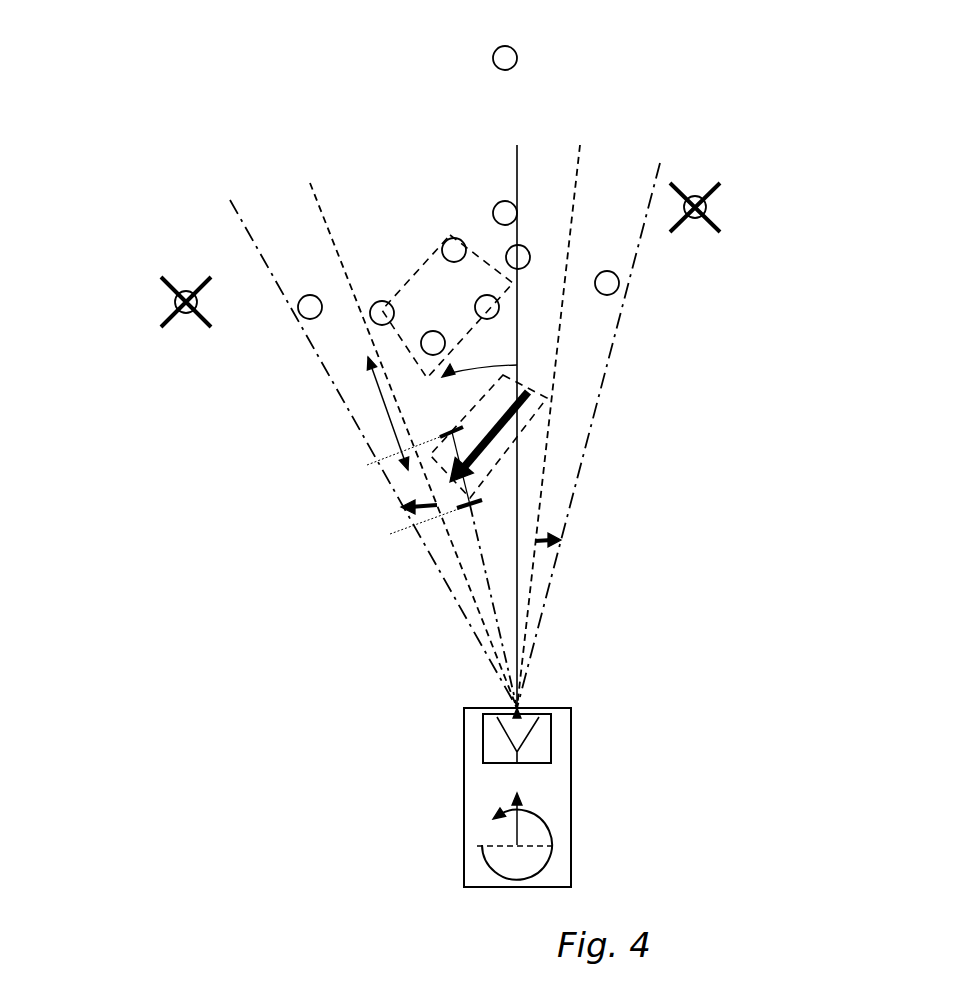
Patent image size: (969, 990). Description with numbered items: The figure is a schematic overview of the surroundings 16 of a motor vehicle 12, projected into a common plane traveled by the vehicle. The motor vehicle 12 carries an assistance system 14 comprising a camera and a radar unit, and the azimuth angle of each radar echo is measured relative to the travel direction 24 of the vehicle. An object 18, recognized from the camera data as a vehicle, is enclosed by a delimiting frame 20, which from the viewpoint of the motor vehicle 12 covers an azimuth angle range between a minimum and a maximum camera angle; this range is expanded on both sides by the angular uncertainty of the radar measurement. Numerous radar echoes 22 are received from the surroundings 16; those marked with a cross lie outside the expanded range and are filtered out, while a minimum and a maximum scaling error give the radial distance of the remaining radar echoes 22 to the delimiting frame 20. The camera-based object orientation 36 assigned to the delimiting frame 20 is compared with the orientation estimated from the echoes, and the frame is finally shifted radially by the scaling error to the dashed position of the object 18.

The motor vehicle 12 is at (571, 847).
The assistance system 14 is at (551, 742).
The surroundings 16 is at (445, 411).
The object 18 is at (443, 238).
The delimiting frame 20 is at (524, 433).
The radar echoes 22 is at (517, 58).
The travel direction 24 is at (517, 168).
The object orientation 36 is at (490, 455).